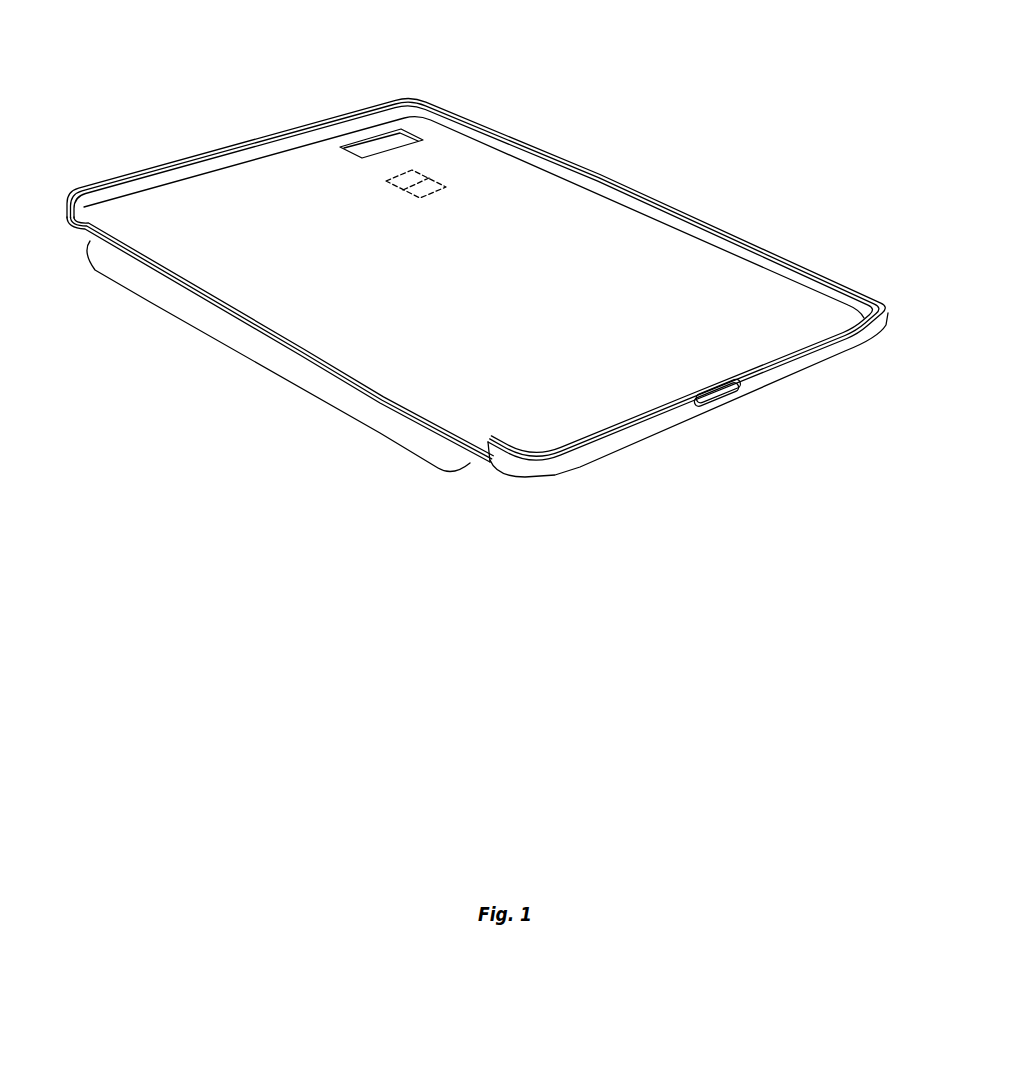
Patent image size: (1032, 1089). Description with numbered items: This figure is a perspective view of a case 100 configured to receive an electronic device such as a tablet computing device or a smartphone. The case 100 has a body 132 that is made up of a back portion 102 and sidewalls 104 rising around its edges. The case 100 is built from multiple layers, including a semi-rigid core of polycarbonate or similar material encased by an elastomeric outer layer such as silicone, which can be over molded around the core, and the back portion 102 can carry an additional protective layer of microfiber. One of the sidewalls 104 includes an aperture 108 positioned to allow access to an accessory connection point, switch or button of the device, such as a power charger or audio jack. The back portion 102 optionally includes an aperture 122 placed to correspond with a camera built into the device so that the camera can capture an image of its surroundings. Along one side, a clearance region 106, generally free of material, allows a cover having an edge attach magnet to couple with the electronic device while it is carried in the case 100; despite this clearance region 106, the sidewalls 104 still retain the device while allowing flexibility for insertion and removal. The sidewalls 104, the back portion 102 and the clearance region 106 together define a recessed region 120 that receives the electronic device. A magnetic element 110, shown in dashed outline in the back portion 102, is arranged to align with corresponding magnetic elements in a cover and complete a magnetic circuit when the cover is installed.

The case 100 is at (486, 70).
The back portion 102 is at (262, 249).
The sidewalls 104 is at (227, 153).
The clearance region 106 is at (220, 345).
The aperture 108 is at (713, 402).
The magnetic element 110 is at (387, 198).
The recessed region 120 is at (500, 177).
The aperture 122 is at (364, 140).
The body 132 is at (523, 310).